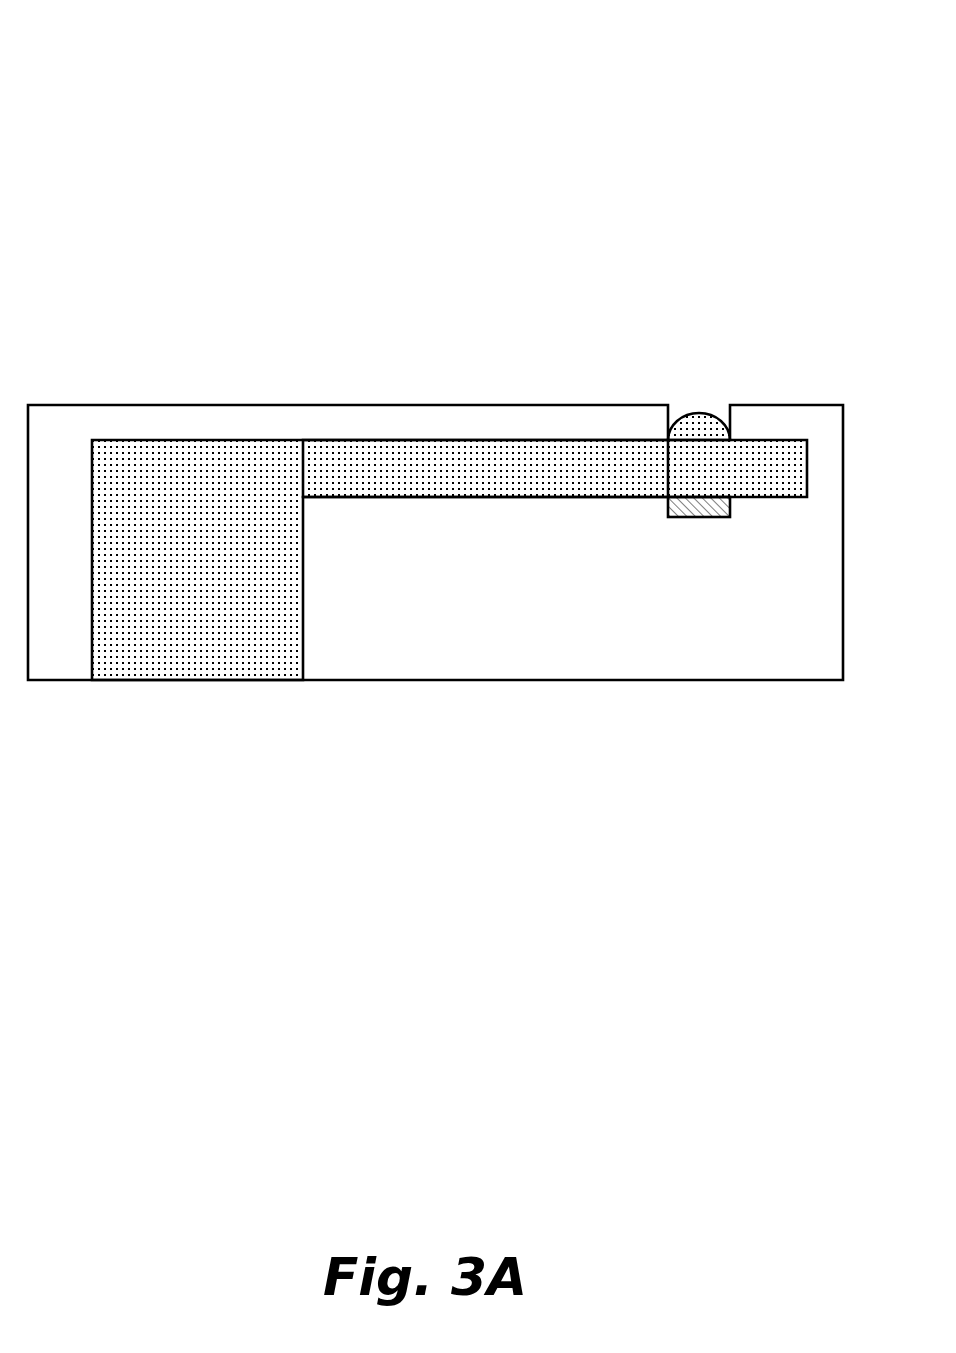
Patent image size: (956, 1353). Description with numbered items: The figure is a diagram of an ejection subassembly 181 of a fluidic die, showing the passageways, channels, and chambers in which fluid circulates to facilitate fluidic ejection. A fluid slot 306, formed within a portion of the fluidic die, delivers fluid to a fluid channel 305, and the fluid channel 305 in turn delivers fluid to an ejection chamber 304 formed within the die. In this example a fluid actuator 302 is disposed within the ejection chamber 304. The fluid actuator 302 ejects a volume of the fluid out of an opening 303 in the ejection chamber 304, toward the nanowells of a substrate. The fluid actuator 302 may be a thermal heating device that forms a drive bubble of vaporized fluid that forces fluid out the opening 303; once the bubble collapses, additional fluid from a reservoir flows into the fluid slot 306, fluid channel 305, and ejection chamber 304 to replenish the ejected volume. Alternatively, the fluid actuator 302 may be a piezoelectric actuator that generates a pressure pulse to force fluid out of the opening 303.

The ejection subassembly 181 is at (288, 94).
The fluid actuator 302 is at (703, 512).
The opening 303 is at (697, 401).
The ejection chamber 304 is at (708, 466).
The fluid channel 305 is at (466, 471).
The fluid slot 306 is at (198, 640).